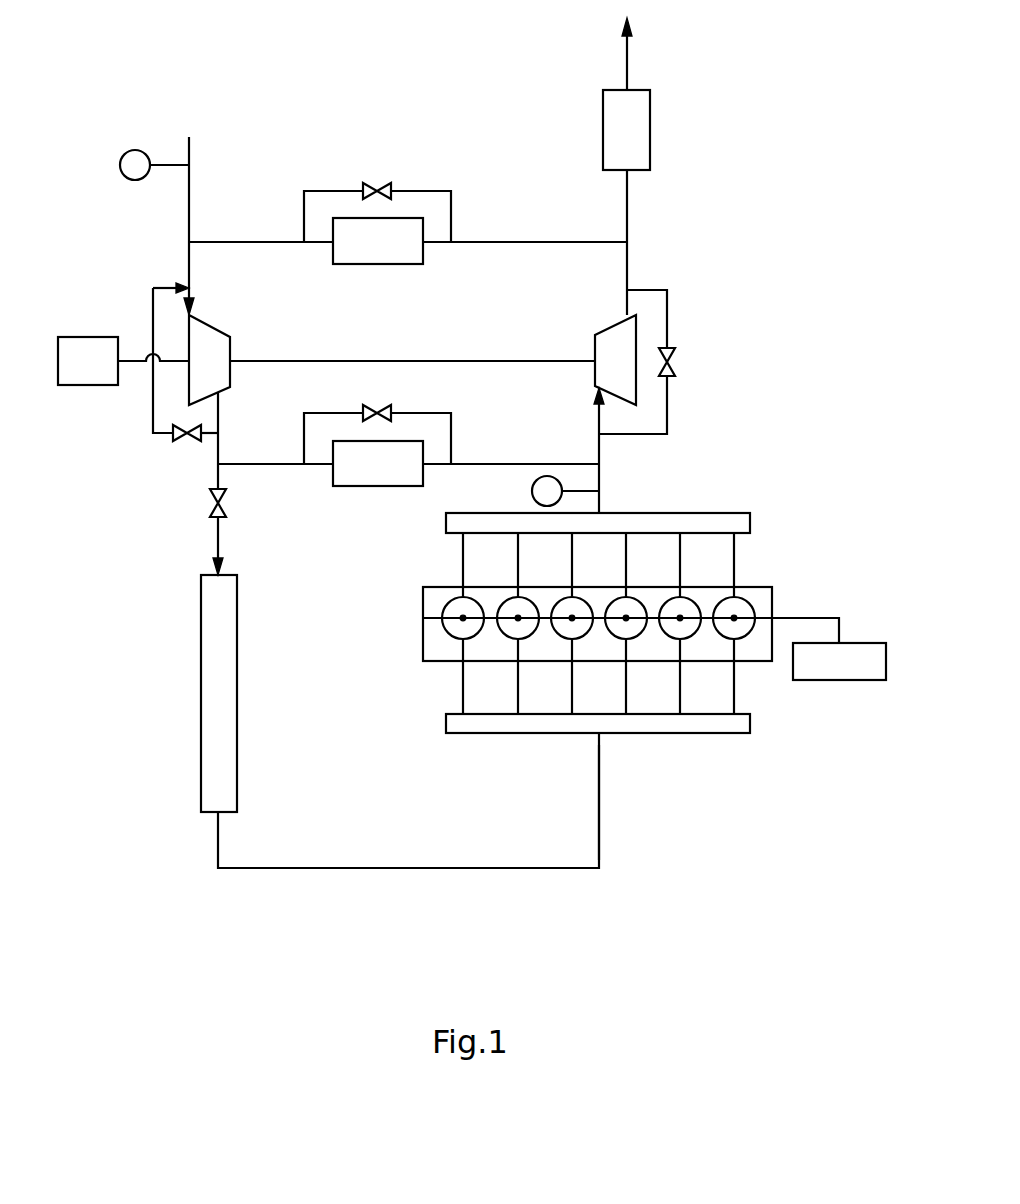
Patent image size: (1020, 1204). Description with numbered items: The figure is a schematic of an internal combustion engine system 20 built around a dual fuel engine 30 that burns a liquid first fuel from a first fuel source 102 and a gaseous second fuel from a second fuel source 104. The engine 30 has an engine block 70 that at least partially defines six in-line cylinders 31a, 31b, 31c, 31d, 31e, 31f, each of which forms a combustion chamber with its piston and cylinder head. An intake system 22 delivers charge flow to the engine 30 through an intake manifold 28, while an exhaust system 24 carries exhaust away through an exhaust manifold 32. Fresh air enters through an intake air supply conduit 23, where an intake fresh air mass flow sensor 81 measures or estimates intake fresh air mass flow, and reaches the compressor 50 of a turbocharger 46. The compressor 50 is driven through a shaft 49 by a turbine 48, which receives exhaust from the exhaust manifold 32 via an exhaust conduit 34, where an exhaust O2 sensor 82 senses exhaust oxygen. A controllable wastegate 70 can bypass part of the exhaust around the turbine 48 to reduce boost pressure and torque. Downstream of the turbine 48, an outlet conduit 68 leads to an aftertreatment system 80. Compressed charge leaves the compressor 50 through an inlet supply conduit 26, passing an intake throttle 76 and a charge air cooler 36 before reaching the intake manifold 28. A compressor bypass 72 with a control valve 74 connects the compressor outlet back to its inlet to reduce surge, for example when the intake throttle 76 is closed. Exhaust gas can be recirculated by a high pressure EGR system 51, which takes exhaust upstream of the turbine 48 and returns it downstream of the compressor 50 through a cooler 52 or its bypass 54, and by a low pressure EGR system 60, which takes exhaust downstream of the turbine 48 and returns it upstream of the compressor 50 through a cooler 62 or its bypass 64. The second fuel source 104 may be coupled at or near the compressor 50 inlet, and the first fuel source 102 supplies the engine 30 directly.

The internal combustion engine system 20 is at (808, 458).
The intake system 22 is at (177, 800).
The intake air supply conduit 23 is at (189, 205).
The exhaust system 24 is at (688, 248).
The inlet supply conduit 26 is at (599, 793).
The intake manifold 28 is at (730, 733).
The dual fuel engine 30 is at (423, 607).
The cylinder 31a is at (739, 634).
The cylinder 31b is at (678, 605).
The cylinder 31c is at (630, 634).
The cylinder 31d is at (570, 605).
The cylinder 31e is at (522, 634).
The cylinder 31f is at (461, 605).
The exhaust manifold 32 is at (730, 513).
The exhaust conduit 34 is at (599, 478).
The charge air cooler 36 is at (201, 677).
The turbocharger 46 is at (384, 330).
The turbine 48 is at (615, 360).
The shaft 49 is at (304, 361).
The compressor 50 is at (209, 360).
The high pressure EGR system 51 is at (366, 494).
The cooler 52 is at (423, 468).
The bypass 54 is at (438, 413).
The low pressure EGR system 60 is at (378, 165).
The cooler 62 is at (423, 247).
The bypass 64 is at (438, 191).
The outlet conduit 68 is at (627, 205).
The wastegate 70 is at (667, 302).
The compressor bypass 72 is at (153, 415).
The control valve 74 is at (186, 442).
The intake throttle 76 is at (210, 509).
The aftertreatment system 80 is at (650, 102).
The intake fresh air mass flow sensor 81 is at (120, 165).
The exhaust O2 sensor 82 is at (532, 491).
The first fuel source 102 is at (858, 643).
The second fuel source 104 is at (78, 337).